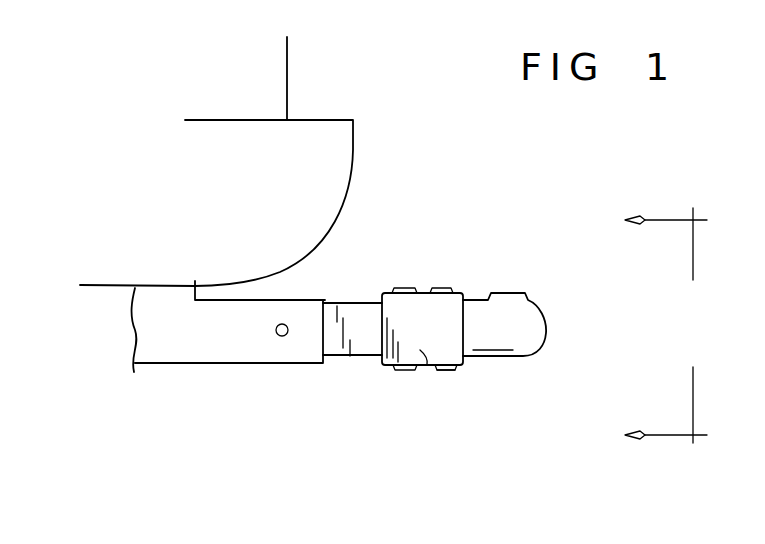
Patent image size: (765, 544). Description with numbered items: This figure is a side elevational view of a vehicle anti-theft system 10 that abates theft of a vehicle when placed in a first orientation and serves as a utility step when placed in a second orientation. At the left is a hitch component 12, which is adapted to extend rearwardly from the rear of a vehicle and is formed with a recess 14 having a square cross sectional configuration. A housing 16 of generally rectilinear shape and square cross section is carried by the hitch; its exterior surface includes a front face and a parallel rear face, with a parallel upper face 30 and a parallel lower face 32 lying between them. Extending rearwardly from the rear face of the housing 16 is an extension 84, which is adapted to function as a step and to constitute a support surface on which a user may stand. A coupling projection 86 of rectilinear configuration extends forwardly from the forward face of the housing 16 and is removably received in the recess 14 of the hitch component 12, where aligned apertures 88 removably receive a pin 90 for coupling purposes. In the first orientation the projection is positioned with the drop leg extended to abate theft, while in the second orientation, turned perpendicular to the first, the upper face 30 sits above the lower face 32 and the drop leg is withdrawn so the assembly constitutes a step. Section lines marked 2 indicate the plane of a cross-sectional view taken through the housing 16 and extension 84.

The section line 2- 2 is at (676, 329).
The vehicle anti-theft system 10 is at (422, 207).
The hitch component 12 is at (228, 364).
The recess 14 is at (323, 328).
The housing 16 is at (427, 365).
The upper face 30 is at (425, 290).
The lower face 32 is at (438, 370).
The extension 84 is at (520, 333).
The coupling projection 86 is at (360, 357).
The apertures 88 is at (290, 299).
The pin 90 is at (287, 299).